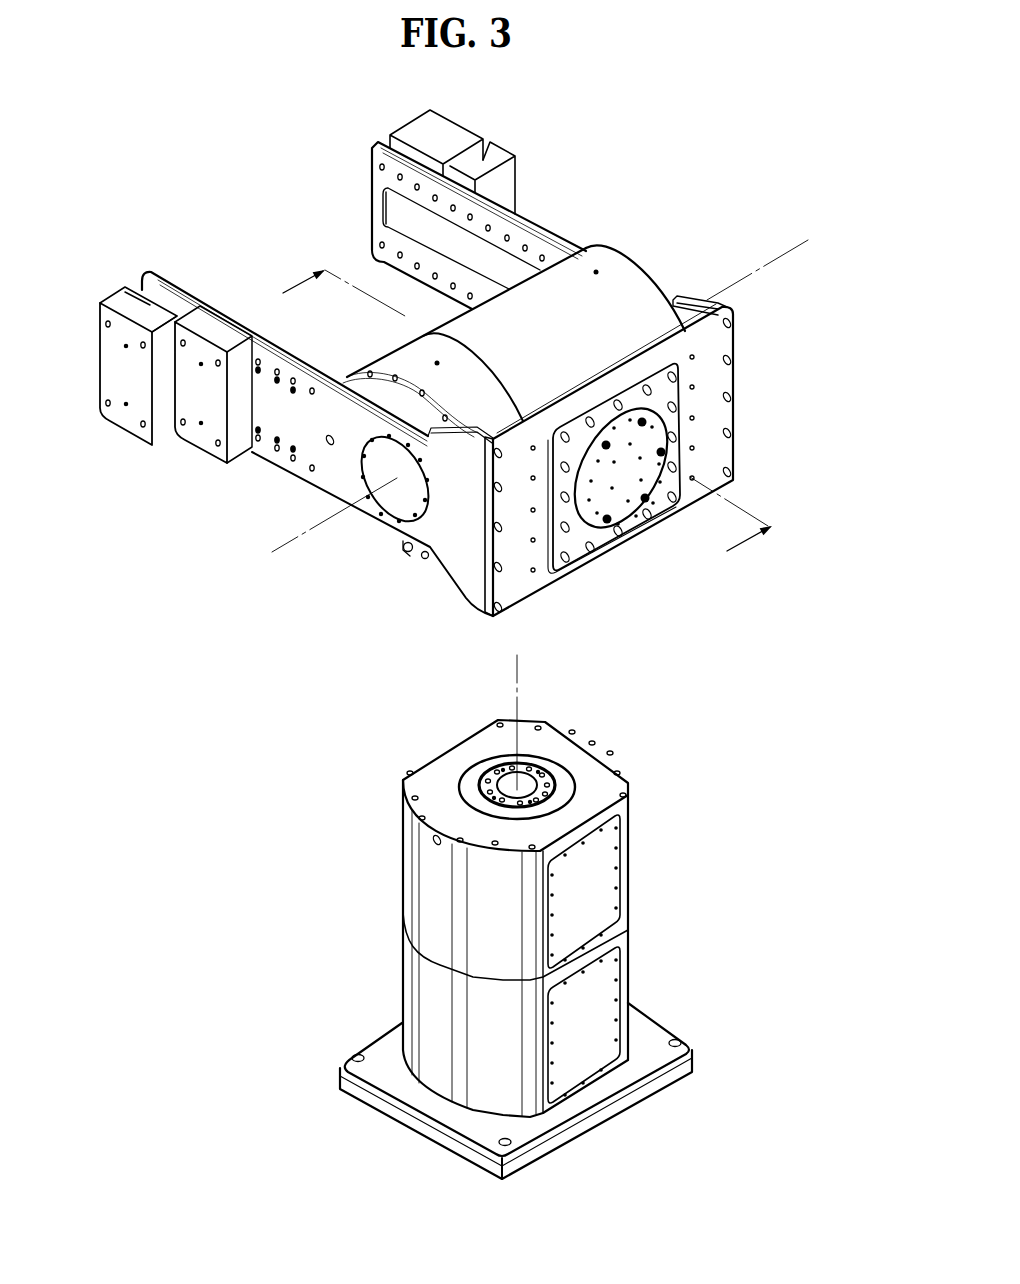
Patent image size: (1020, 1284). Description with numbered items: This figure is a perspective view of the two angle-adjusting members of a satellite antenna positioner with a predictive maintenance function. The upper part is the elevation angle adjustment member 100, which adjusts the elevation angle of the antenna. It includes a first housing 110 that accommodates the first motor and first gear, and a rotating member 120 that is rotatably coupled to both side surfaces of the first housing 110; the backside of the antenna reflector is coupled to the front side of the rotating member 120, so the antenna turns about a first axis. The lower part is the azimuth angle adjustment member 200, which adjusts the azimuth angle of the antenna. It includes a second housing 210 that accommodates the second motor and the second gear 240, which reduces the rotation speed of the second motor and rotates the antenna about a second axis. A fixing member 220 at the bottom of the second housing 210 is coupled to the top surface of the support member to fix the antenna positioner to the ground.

The elevation angle adjustment member 100 is at (462, 363).
The first housing 110 is at (633, 290).
The rotating member 120 is at (713, 378).
The azimuth angle adjustment member 200 is at (514, 902).
The second housing 210 is at (432, 887).
The fixing member 220 is at (390, 1079).
The second gear 240 is at (489, 771).